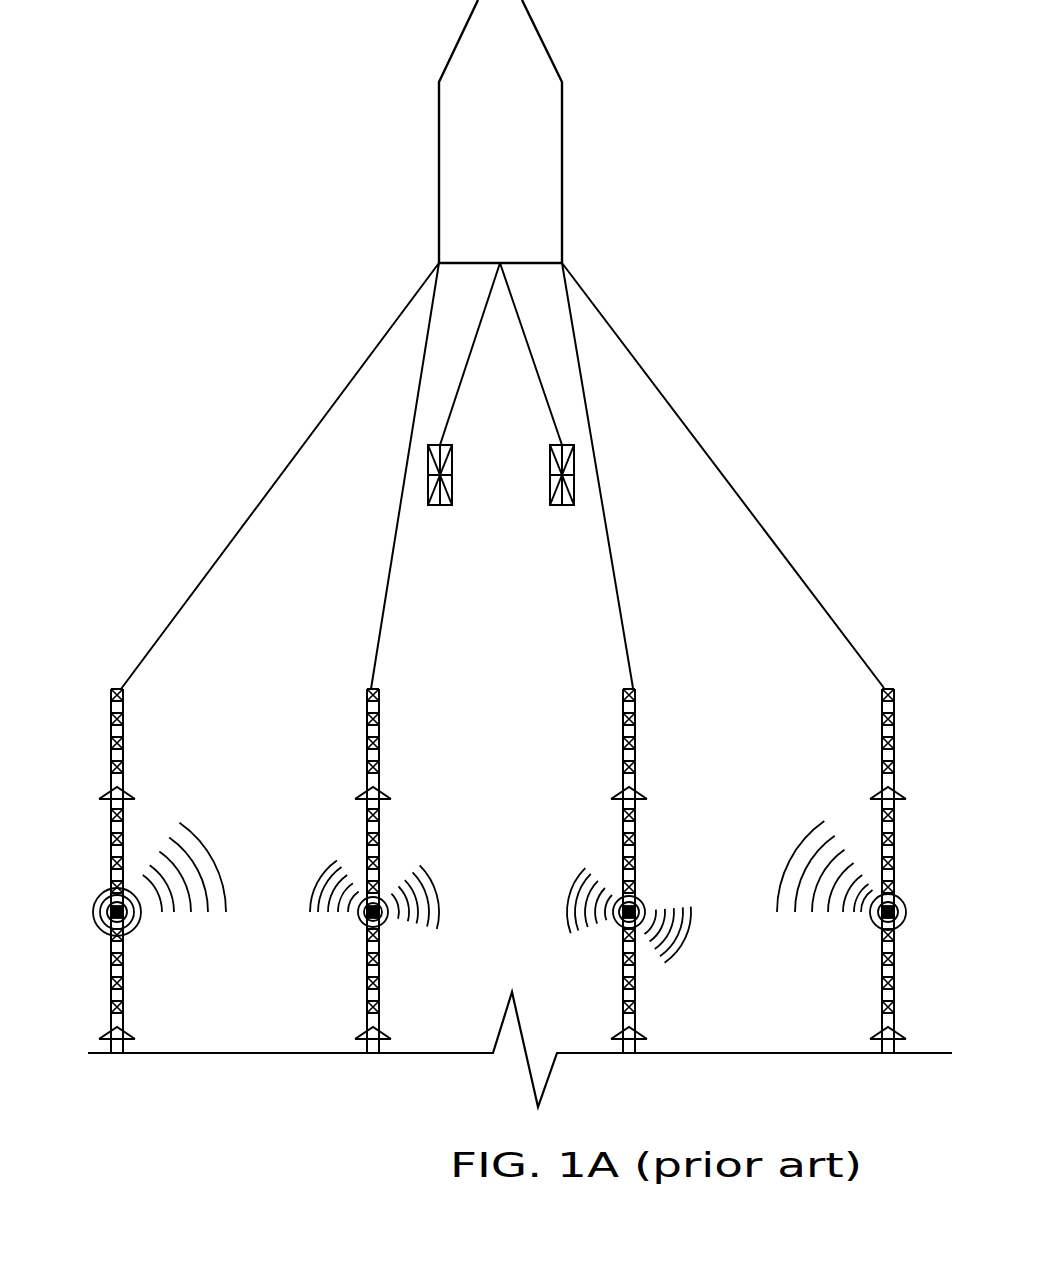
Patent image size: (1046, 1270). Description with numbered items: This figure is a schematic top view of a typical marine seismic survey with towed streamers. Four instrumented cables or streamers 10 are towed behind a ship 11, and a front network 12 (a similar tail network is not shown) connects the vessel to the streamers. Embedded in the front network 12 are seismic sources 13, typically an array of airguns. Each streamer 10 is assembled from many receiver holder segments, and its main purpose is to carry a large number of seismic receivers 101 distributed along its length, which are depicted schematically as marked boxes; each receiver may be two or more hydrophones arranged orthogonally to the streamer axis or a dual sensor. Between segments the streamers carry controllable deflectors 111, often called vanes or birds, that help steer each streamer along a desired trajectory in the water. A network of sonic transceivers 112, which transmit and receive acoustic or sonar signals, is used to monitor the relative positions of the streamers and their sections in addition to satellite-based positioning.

The streamer 10 is at (195, 688).
The ship 11 is at (521, 173).
The front network 12 is at (345, 345).
The seismic source 13 is at (550, 476).
The seismic receiver 101 is at (123, 719).
The controllable deflector 111 is at (127, 1028).
The sonic transceiver 112 is at (93, 905).